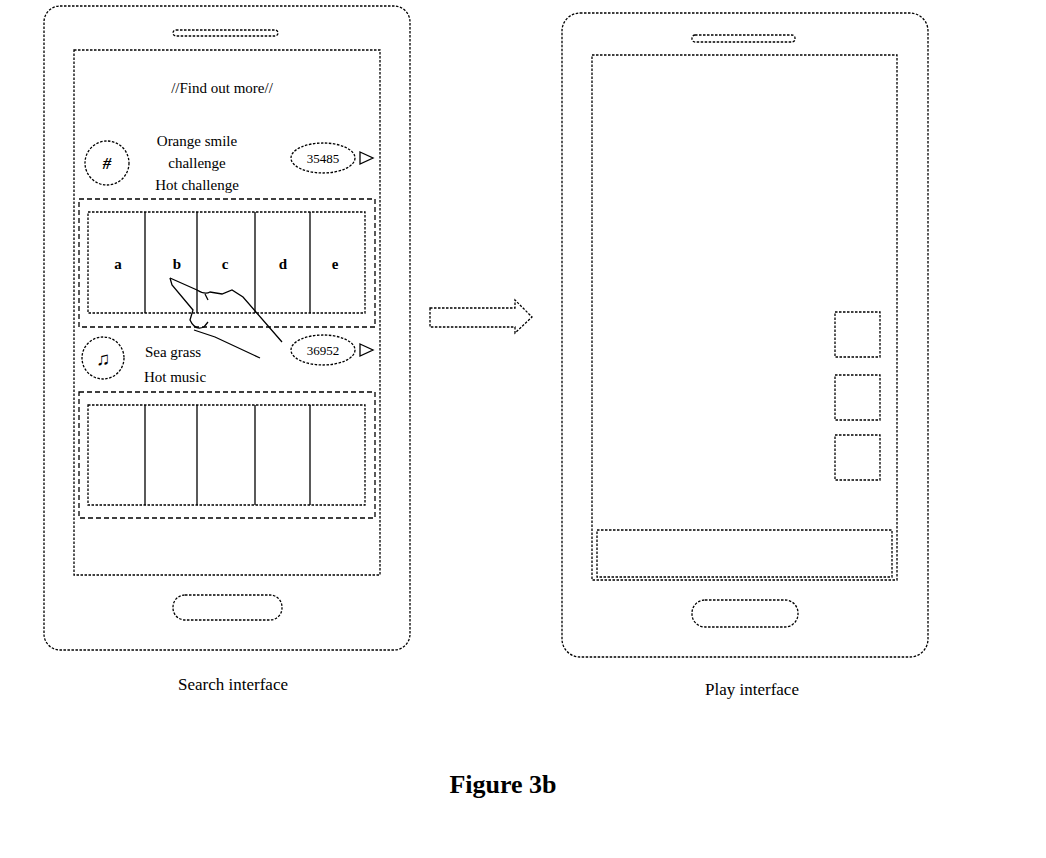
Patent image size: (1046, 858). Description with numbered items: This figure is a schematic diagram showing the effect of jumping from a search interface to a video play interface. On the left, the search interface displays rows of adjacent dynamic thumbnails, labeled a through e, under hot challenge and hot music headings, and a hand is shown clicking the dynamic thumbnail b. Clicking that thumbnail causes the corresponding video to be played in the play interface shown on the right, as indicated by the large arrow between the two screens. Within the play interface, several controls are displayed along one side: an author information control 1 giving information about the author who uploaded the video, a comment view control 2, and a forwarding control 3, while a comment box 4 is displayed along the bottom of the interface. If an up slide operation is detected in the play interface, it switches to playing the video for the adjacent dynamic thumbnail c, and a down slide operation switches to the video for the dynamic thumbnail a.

The author information control 1 is at (880, 333).
The comment view control 2 is at (880, 398).
The forwarding control 3 is at (880, 458).
The comment box 4 is at (880, 530).